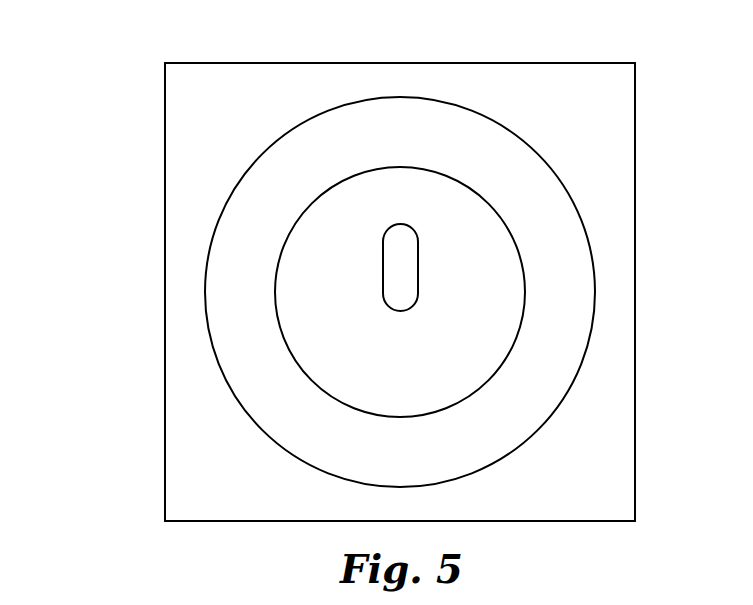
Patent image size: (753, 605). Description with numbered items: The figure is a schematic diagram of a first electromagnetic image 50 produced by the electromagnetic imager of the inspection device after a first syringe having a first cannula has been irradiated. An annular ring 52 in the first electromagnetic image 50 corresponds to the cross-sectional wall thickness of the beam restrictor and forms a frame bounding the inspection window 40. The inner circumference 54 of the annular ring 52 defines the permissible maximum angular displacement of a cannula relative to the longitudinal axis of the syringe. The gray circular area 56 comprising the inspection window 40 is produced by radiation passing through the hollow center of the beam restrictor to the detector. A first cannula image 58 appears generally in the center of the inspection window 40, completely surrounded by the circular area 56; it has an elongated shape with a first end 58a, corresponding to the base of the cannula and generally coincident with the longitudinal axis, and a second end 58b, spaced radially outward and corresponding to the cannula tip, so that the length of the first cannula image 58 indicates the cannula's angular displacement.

The first electromagnetic image 50 is at (104, 128).
The annular ring 52 is at (222, 297).
The inner circumference 54 is at (297, 362).
The gray circular area 56 is at (458, 382).
The inspection window 40 is at (540, 275).
The first cannula image 58 is at (405, 267).
The first end 58a is at (402, 307).
The second end 58b is at (403, 232).